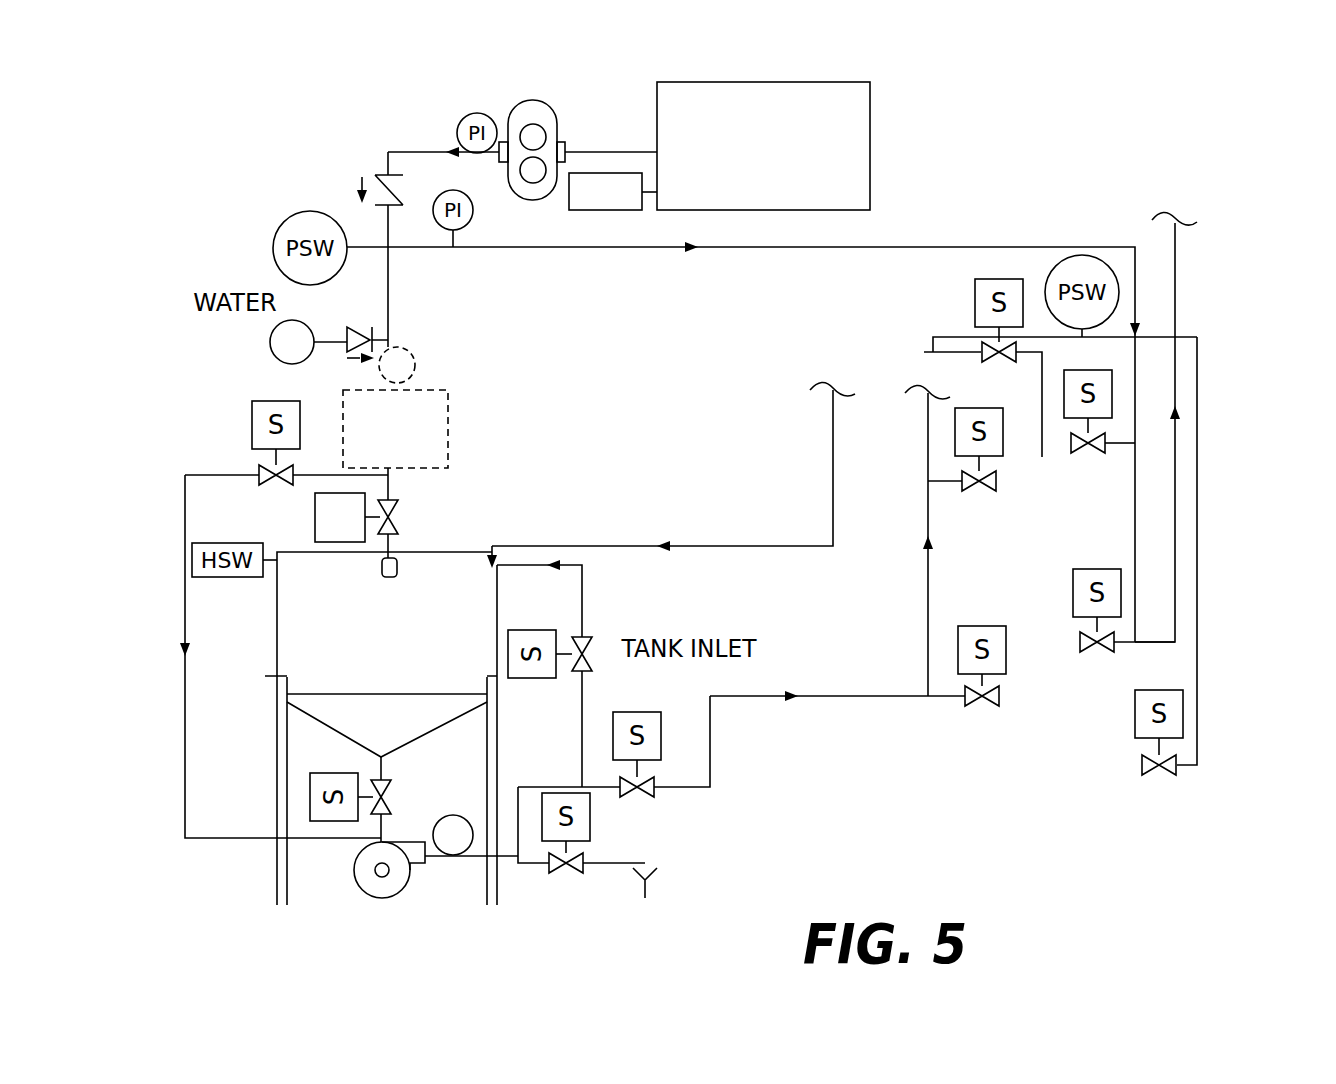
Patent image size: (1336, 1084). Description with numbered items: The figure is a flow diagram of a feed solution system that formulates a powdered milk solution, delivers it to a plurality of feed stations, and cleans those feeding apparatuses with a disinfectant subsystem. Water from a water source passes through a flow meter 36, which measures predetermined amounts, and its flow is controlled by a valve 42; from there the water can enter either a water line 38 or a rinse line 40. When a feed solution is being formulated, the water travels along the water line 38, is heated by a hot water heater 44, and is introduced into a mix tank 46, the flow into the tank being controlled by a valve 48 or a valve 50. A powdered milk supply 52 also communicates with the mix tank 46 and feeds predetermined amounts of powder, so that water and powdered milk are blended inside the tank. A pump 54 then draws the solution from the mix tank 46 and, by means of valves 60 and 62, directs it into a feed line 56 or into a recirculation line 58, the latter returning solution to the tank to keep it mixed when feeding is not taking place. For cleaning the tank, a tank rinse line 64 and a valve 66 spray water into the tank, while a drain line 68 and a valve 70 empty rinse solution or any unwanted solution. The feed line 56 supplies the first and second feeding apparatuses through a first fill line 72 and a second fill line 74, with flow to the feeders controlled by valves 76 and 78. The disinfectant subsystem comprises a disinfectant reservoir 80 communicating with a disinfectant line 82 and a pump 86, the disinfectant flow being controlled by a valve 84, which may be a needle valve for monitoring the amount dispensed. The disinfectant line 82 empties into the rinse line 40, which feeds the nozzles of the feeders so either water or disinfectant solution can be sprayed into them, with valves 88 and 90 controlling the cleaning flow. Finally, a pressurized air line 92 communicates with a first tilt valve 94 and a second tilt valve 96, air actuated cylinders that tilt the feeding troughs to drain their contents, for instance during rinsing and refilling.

The flow meter 36 is at (270, 342).
The water line 38 is at (390, 386).
The rinse line 40 is at (388, 297).
The valve 42 is at (363, 330).
The hot water heater 44 is at (448, 418).
The mix tank 46 is at (381, 725).
The valve 48 is at (260, 433).
The valve 50 is at (387, 782).
The powdered milk supply 52 is at (833, 467).
The pump 54 is at (382, 890).
The feed line 56 is at (542, 786).
The recirculation line 58 is at (582, 582).
The valve 60 is at (660, 740).
The valve 62 is at (530, 673).
The tank rinse line 64 is at (393, 477).
The valve 66 is at (398, 527).
The drain line 68 is at (665, 873).
The valve 70 is at (584, 864).
The first fill line 72 is at (938, 710).
The second fill line 74 is at (932, 482).
The valve 76 is at (1006, 645).
The valve 78 is at (1003, 415).
The disinfectant reservoir 80 is at (862, 145).
The disinfectant line 82 is at (607, 152).
The valve 84 is at (375, 175).
The pump 86 is at (527, 110).
The valve 88 is at (1122, 600).
The valve 90 is at (1112, 393).
The pressurized air line 92 is at (1198, 353).
The first tilt valve 94 is at (1183, 727).
The second tilt valve 96 is at (977, 300).